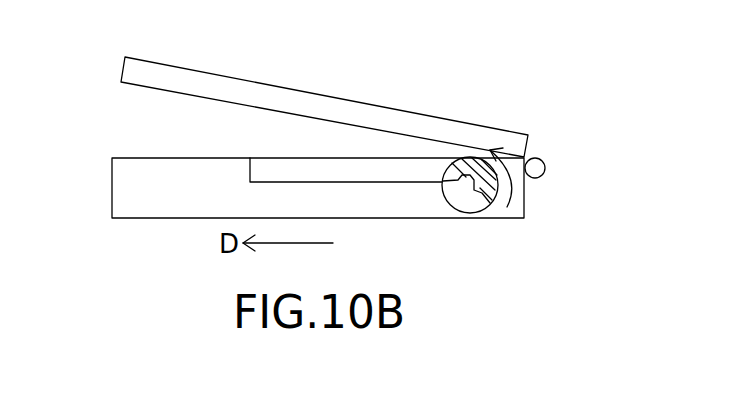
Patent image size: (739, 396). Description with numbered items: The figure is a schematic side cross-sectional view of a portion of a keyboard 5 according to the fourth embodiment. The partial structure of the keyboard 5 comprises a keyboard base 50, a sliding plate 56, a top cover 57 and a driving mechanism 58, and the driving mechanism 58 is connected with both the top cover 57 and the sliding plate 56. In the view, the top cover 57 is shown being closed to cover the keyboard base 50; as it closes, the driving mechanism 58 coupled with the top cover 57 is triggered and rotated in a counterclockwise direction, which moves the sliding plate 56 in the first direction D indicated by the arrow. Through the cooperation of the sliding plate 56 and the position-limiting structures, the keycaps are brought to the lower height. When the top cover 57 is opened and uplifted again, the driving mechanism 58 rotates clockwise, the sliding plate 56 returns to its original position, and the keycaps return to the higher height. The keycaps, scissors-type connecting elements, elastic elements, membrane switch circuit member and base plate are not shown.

The keyboard 5 is at (194, 29).
The keyboard base 50 is at (158, 168).
The sliding plate 56 is at (318, 168).
The top cover 57 is at (313, 103).
The driving mechanism 58 is at (473, 203).